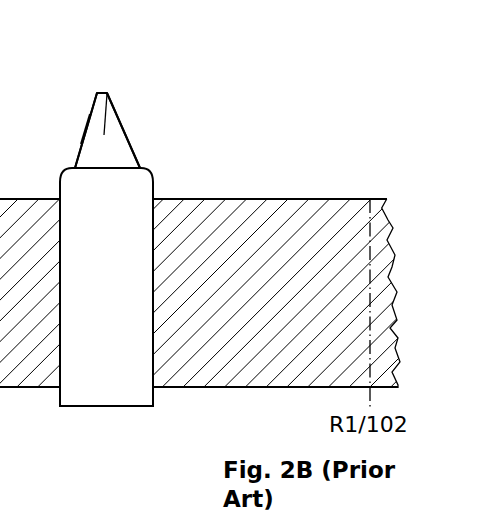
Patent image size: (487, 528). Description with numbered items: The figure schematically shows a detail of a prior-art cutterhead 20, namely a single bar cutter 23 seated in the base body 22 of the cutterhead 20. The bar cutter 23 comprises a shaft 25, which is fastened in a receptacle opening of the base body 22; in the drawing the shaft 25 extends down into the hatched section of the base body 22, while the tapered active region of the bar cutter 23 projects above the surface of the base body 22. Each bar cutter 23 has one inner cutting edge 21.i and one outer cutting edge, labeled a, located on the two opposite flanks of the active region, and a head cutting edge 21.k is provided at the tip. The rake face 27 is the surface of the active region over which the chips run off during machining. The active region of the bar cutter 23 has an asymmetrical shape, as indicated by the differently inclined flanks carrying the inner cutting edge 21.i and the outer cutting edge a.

The cutterhead 20 is at (383, 115).
The base body 22 is at (291, 230).
The bar cutter 23 is at (173, 104).
The shaft 25 is at (117, 380).
The rake face 27 is at (107, 93).
The head cutting edge 21.k is at (97, 93).
The inner cutting edge 21.i is at (130, 142).
The outer cutting edge a is at (83, 134).